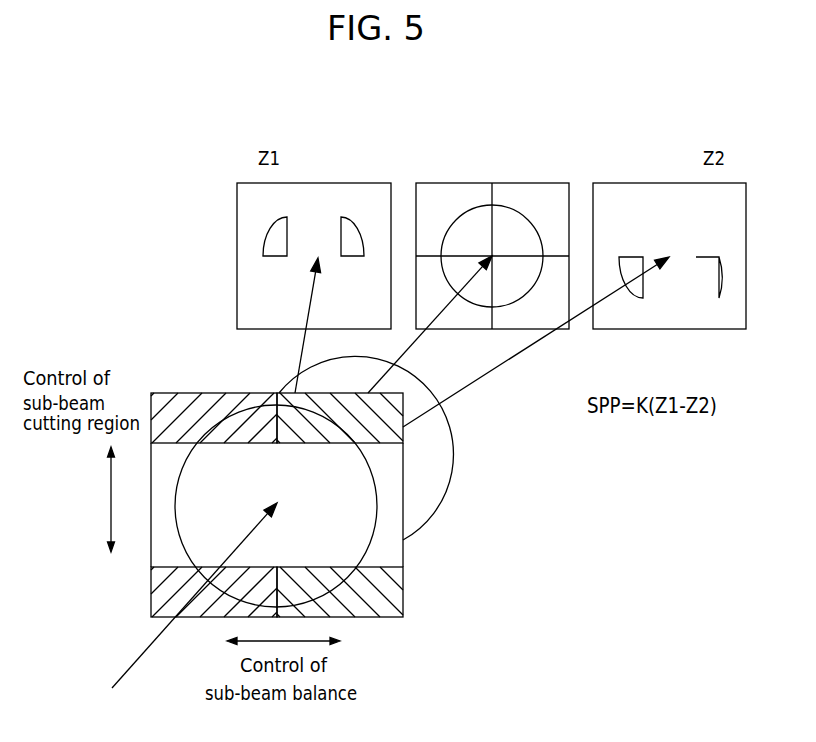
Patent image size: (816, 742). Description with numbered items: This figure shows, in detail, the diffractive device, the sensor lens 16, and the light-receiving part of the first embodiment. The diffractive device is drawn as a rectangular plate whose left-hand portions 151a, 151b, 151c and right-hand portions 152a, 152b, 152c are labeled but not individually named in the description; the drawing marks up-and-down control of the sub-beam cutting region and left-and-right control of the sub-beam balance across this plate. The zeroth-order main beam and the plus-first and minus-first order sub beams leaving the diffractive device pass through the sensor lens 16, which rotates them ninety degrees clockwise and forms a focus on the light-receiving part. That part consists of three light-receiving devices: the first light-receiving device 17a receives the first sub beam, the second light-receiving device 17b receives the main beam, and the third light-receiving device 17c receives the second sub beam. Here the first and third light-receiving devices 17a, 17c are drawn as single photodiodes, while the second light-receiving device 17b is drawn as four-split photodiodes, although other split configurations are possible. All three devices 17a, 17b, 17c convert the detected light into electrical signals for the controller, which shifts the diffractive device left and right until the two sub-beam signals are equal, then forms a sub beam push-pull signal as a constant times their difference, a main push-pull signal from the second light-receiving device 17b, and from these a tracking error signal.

The sensor lens 16 is at (445, 477).
The first light-receiving device 17a is at (363, 183).
The second light-receiving device 17b is at (524, 183).
The third light-receiving device 17c is at (642, 183).
The upper left sub-beam cutting region 151a is at (183, 402).
The left main beam region 151b is at (155, 559).
The lower left sub-beam cutting region 151c is at (203, 608).
The upper right sub-beam cutting region 152a is at (403, 437).
The right main beam region 152b is at (398, 554).
The lower right sub-beam cutting region 152c is at (398, 603).